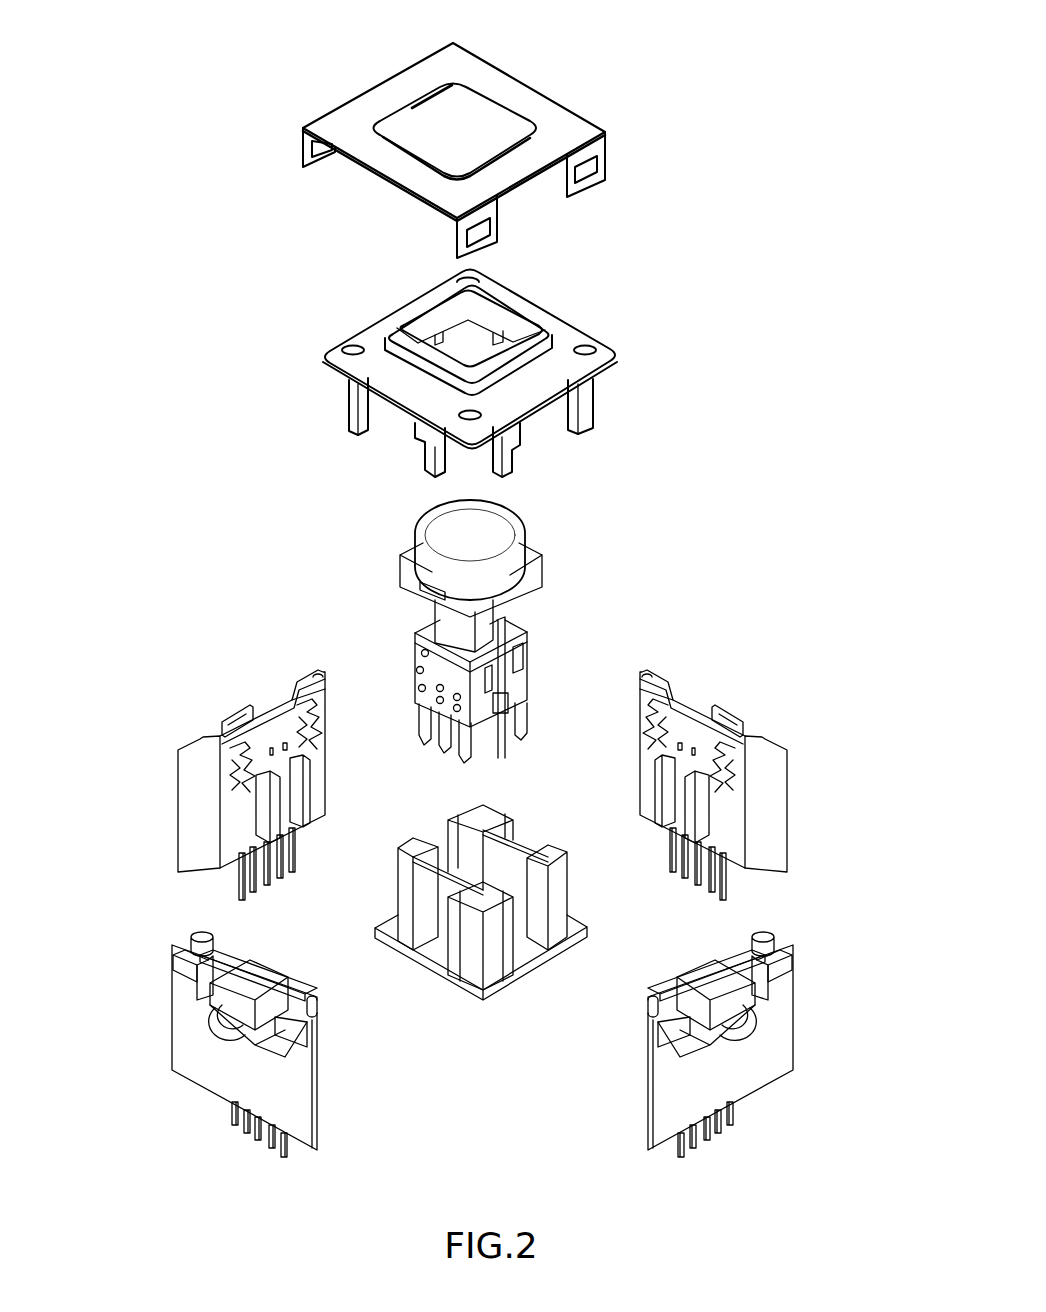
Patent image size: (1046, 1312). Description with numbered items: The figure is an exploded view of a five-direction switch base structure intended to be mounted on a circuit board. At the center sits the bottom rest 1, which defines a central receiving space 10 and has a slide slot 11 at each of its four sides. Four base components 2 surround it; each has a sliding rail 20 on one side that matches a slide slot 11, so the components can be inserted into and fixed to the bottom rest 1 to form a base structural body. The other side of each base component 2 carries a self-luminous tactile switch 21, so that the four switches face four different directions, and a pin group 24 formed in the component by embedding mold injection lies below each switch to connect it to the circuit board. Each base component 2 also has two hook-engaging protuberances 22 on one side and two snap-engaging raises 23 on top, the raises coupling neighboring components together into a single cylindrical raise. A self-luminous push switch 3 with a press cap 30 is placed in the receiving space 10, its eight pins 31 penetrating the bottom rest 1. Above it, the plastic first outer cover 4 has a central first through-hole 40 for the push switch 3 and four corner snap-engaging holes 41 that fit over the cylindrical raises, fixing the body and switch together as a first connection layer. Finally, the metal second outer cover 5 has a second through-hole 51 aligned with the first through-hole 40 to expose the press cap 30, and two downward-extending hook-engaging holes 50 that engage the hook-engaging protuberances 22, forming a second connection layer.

The bottom rest 1 is at (512, 975).
The receiving space 10 is at (508, 855).
The slide slot 11 is at (433, 920).
The base component 2 is at (200, 810).
The sliding rail 20 is at (303, 792).
The self-luminous tactile switch 21 is at (222, 720).
The hook-engaging protuberance 22 is at (177, 957).
The snap-engaging raise 23 is at (323, 678).
The pin group 24 is at (285, 870).
The self-luminous push switch 3 is at (527, 655).
The press cap 30 is at (487, 535).
The pins 31 is at (507, 743).
The first outer cover 4 is at (385, 372).
The first through-hole 40 is at (473, 338).
The snap-engaging hole 41 is at (353, 350).
The second outer cover 5 is at (560, 127).
The hook-engaging hole 50 is at (597, 162).
The second through-hole 51 is at (453, 107).